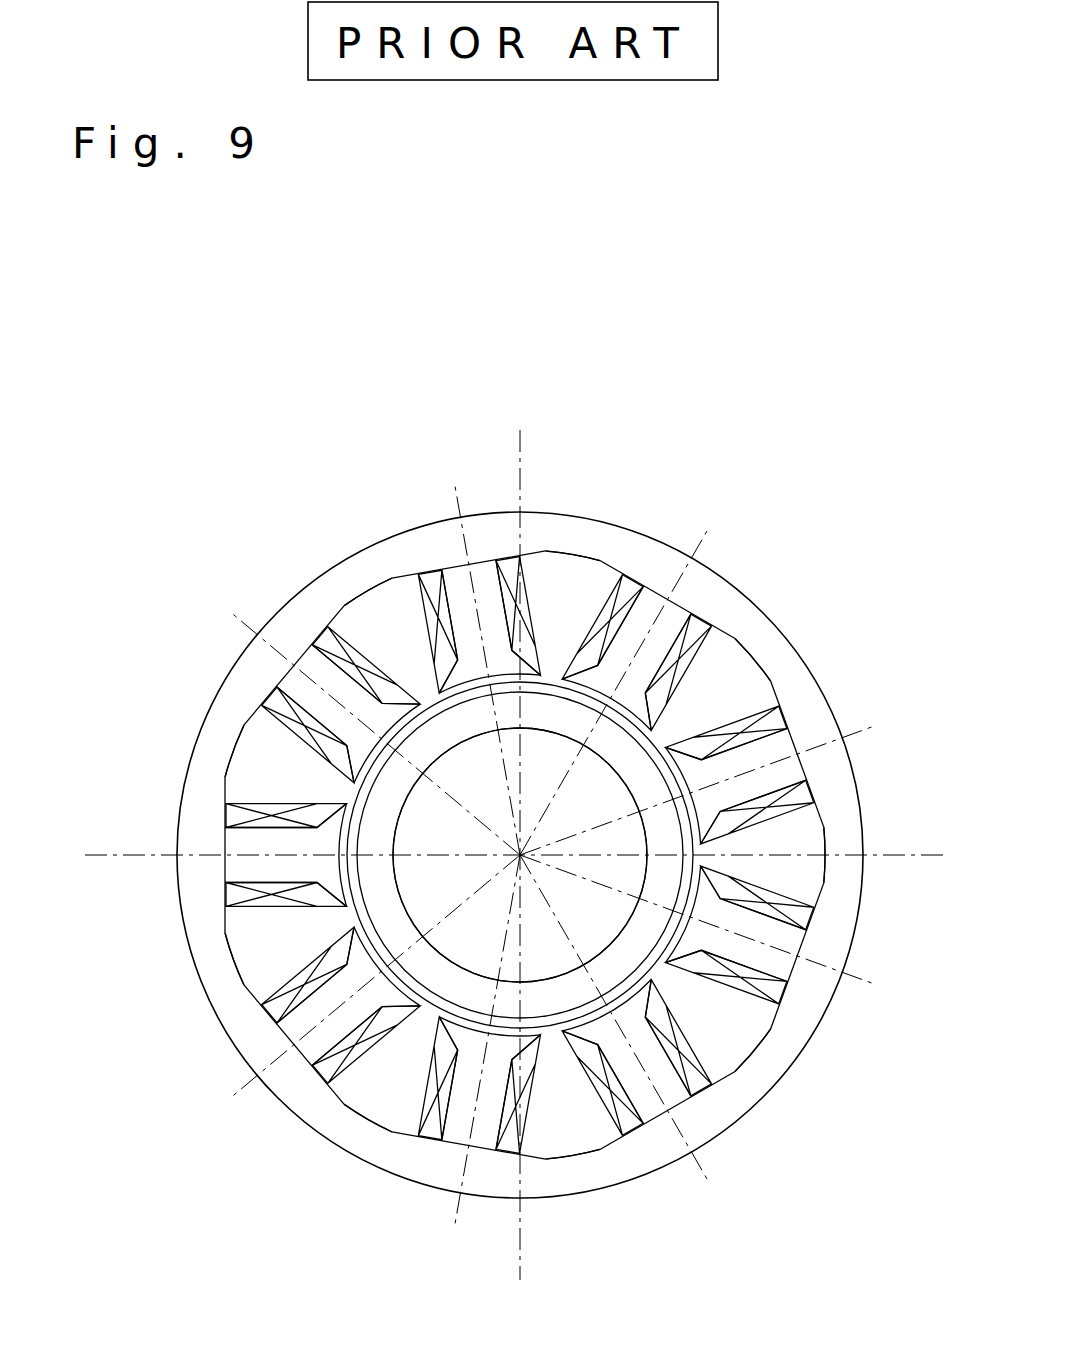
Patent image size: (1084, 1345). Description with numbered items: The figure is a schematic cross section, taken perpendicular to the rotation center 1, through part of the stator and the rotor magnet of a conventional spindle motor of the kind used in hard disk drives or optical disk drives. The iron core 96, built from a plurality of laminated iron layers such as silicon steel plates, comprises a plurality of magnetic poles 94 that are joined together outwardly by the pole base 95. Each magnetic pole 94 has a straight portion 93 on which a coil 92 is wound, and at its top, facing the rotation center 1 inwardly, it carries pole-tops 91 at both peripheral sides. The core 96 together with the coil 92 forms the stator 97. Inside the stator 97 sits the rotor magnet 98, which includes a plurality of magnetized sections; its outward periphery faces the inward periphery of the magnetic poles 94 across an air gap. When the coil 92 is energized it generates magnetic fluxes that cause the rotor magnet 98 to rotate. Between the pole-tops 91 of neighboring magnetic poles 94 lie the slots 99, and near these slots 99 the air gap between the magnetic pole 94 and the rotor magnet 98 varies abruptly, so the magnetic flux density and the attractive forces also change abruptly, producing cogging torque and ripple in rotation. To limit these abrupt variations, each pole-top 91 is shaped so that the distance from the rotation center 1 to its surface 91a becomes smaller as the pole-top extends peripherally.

The rotation center 1 is at (620, 735).
The pole-top 91 is at (400, 690).
The surface 91a is at (402, 710).
The coil 92 is at (314, 645).
The straight portion 93 is at (337, 688).
The magnetic pole 94 is at (397, 442).
The pole base 95 is at (578, 538).
The iron core 96 is at (453, 390).
The stator 97 is at (405, 335).
The rotor magnet 98 is at (617, 735).
The slot 99 is at (550, 675).